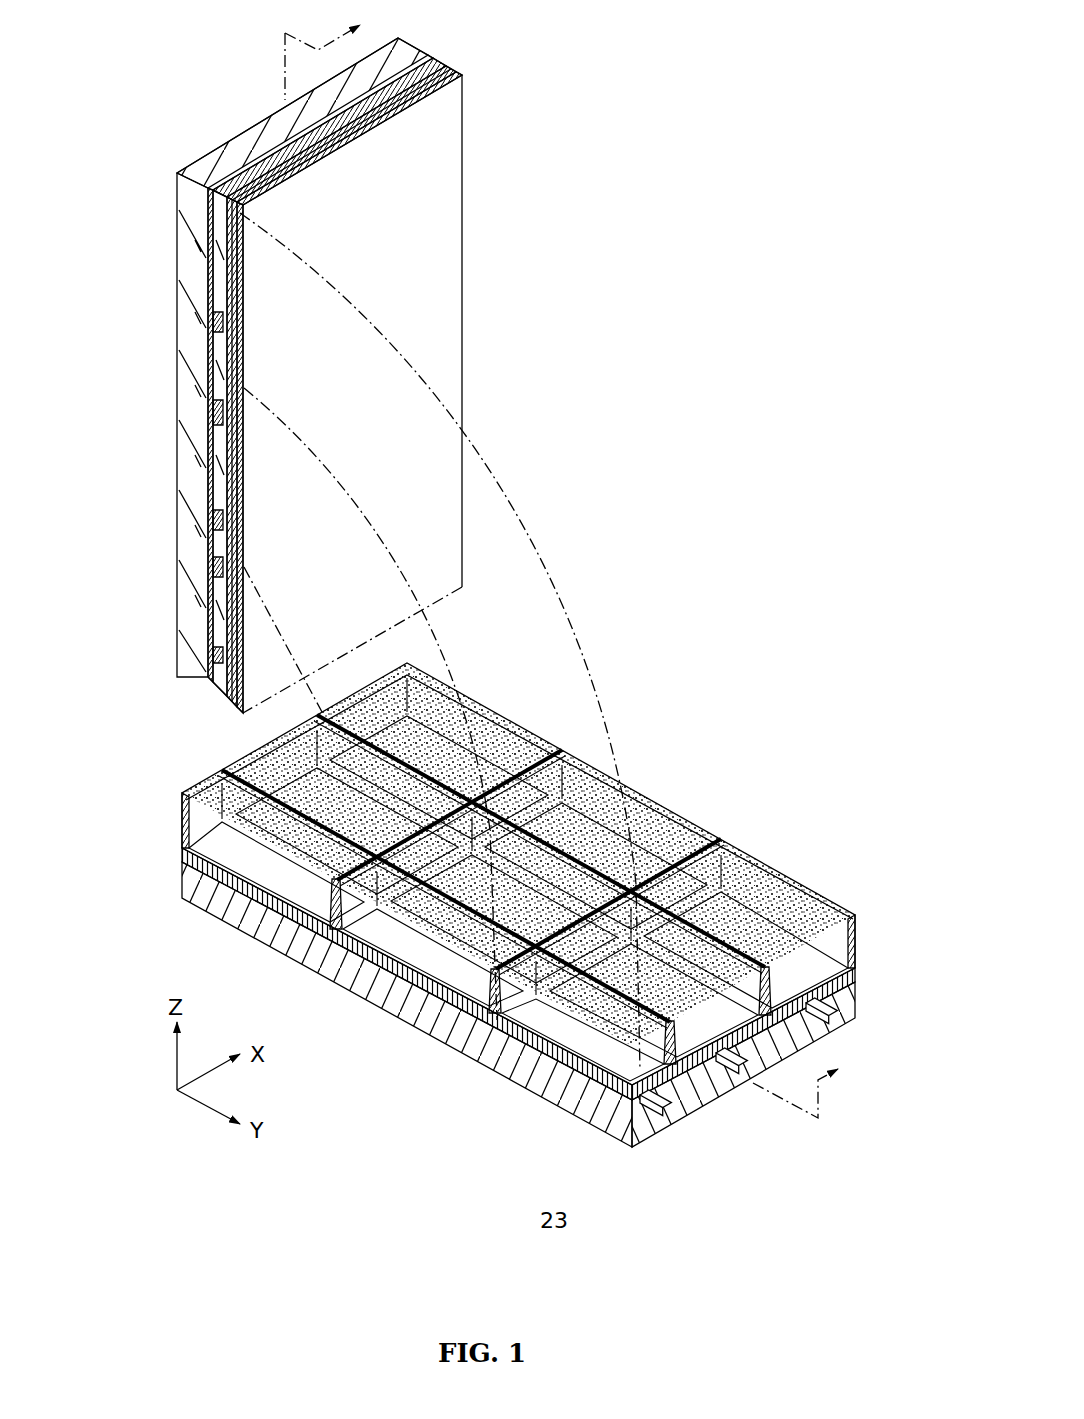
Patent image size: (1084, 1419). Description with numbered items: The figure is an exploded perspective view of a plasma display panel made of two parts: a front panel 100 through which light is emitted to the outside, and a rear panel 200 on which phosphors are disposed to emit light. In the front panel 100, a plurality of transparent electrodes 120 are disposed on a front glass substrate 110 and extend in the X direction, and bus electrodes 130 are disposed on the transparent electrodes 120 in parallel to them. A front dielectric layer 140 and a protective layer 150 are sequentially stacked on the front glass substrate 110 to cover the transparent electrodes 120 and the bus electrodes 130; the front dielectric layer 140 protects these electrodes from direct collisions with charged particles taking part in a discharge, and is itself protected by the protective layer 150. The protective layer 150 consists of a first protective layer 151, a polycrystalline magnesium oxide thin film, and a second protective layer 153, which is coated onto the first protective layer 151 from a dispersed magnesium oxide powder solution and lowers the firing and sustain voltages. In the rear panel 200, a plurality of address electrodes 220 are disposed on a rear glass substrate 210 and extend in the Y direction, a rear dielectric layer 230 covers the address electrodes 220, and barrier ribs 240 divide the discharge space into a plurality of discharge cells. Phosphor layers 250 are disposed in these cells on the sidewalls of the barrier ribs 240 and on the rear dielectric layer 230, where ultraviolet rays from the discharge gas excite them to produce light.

The front panel 100 is at (316, 359).
The front glass substrate 110 is at (187, 275).
The transparent electrodes 120 is at (207, 478).
The bus electrodes 130 is at (217, 512).
The front dielectric layer 140 is at (220, 627).
The protective layer 150 is at (264, 389).
The first protective layer 151 is at (237, 665).
The second protective layer 153 is at (232, 687).
The rear panel 200 is at (561, 905).
The rear glass substrate 210 is at (862, 1000).
The address electrodes 220 is at (840, 1016).
The rear dielectric layer 230 is at (860, 970).
The barrier ribs 240 is at (860, 938).
The phosphor layers 250 is at (537, 1073).